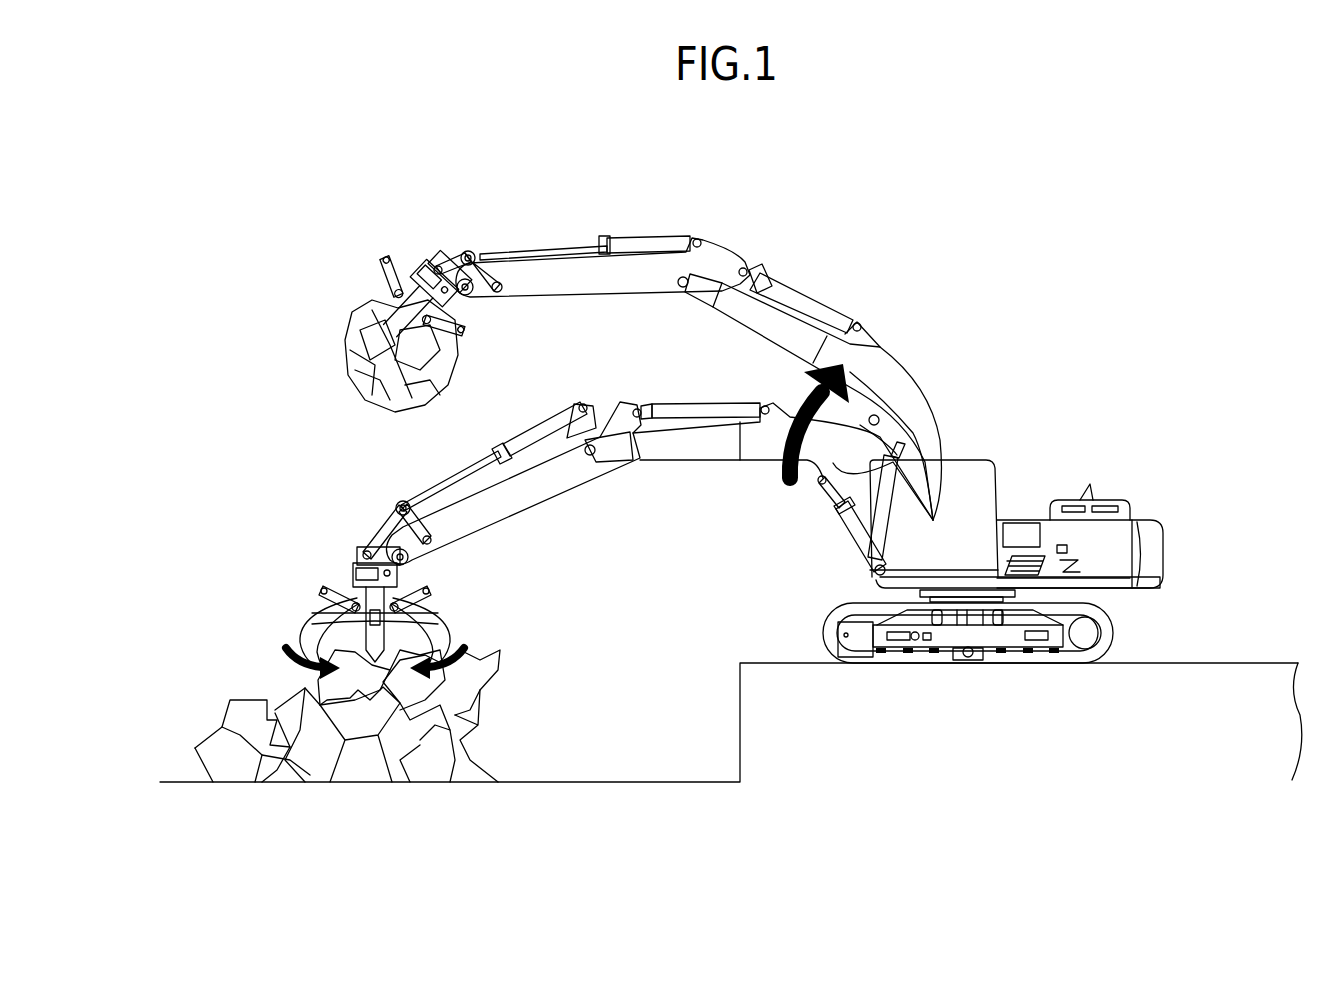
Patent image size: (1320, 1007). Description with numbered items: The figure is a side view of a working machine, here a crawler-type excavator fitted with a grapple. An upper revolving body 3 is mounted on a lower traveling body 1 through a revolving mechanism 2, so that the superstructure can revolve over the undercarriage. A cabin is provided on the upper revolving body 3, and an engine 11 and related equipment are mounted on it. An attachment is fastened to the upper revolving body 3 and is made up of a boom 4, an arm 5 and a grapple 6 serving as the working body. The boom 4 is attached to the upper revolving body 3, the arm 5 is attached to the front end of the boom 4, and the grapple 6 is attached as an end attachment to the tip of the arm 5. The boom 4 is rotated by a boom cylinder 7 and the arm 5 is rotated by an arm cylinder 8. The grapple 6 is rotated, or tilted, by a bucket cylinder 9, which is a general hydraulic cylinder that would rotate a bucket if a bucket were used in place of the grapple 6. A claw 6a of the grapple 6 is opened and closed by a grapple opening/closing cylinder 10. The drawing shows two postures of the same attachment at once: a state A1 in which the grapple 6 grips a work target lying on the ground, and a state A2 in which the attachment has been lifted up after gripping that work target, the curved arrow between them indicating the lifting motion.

The lower traveling body 1 is at (1105, 632).
The revolving mechanism 2 is at (920, 591).
The upper revolving body 3 is at (1165, 552).
The boom 4 is at (783, 415).
The arm 5 is at (503, 495).
The grapple 6 is at (336, 622).
The claw 6a is at (345, 640).
The boom cylinder 7 is at (852, 527).
The arm cylinder 8 is at (704, 410).
The bucket cylinder 9 is at (545, 430).
The grapple opening/closing cylinder 10 is at (348, 590).
The engine 11 is at (1025, 522).
The state of the attachment while gripping A1 is at (578, 500).
The state of the attachment when lifting up A2 is at (738, 240).